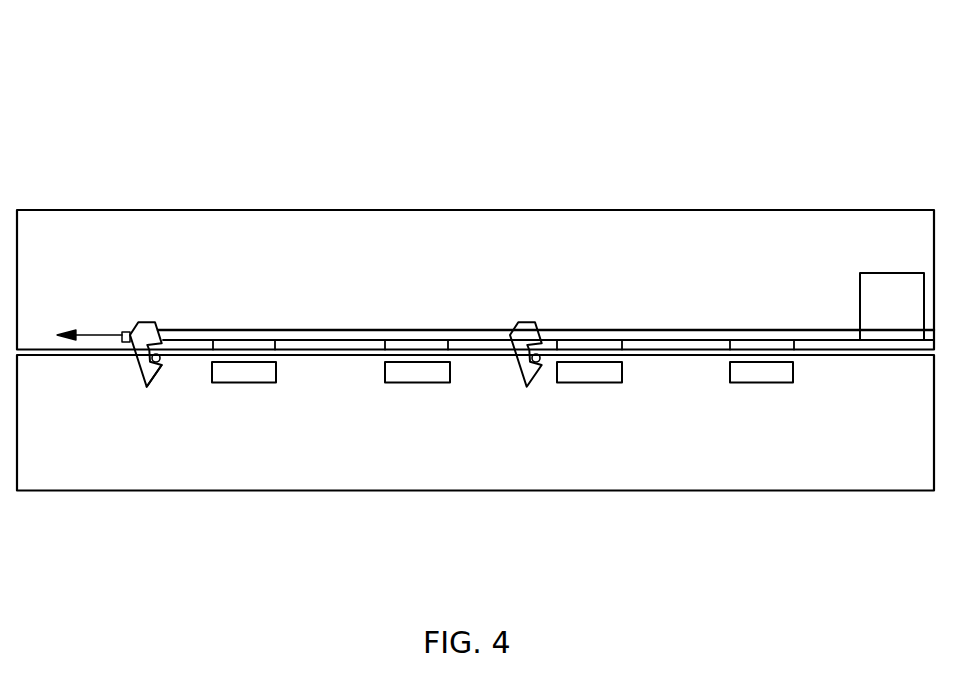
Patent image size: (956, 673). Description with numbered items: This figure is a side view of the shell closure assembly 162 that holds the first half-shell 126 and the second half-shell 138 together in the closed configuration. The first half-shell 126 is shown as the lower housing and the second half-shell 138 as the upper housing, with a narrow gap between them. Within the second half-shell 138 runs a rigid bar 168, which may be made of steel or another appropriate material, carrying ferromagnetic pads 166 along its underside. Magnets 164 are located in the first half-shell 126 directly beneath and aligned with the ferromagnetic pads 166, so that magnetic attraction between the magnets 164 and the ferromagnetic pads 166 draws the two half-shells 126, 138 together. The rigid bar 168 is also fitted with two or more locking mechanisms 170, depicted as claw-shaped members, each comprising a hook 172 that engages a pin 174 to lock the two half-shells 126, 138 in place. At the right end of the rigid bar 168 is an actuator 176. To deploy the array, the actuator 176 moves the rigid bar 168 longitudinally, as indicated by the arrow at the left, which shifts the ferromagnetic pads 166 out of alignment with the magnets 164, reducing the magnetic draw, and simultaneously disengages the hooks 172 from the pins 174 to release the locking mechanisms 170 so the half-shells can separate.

The closure assembly 162 is at (170, 114).
The second half-shell 138 is at (460, 210).
The first half-shell 126 is at (537, 491).
The actuator 176 is at (893, 272).
The rigid bar 168 is at (187, 329).
The ferromagnetic pads 166 is at (405, 349).
The magnets 164 is at (410, 383).
The locking mechanisms 170 is at (133, 362).
The hooks 172 is at (154, 378).
The pins 174 is at (161, 361).